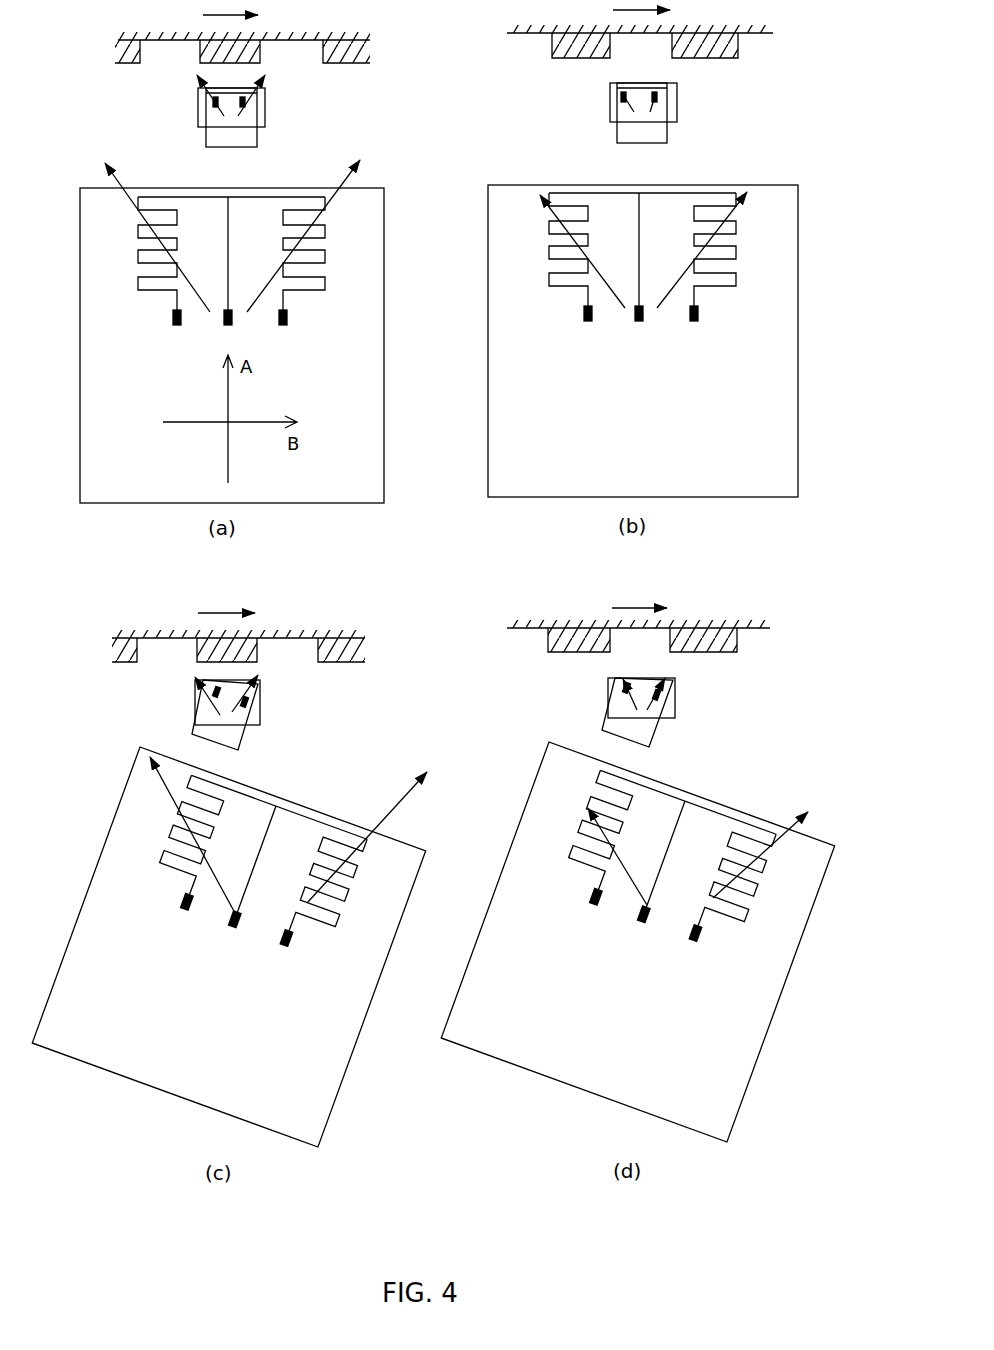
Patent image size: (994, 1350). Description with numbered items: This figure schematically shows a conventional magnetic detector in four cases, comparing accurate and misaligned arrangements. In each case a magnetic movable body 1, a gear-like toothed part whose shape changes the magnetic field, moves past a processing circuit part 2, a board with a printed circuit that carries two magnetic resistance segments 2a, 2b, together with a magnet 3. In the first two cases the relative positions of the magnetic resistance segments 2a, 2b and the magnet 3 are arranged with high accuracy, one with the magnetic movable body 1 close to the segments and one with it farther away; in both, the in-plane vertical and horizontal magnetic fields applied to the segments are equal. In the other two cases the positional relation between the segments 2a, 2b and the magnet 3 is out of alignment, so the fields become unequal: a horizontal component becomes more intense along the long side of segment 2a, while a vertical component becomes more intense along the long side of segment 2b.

The magnetic movable body 1 is at (347, 63).
The processing circuit part 2 is at (247, 135).
The magnetic resistance segment 2a is at (215, 102).
The magnetic resistance segment 2b is at (255, 107).
The magnet 3 is at (250, 103).